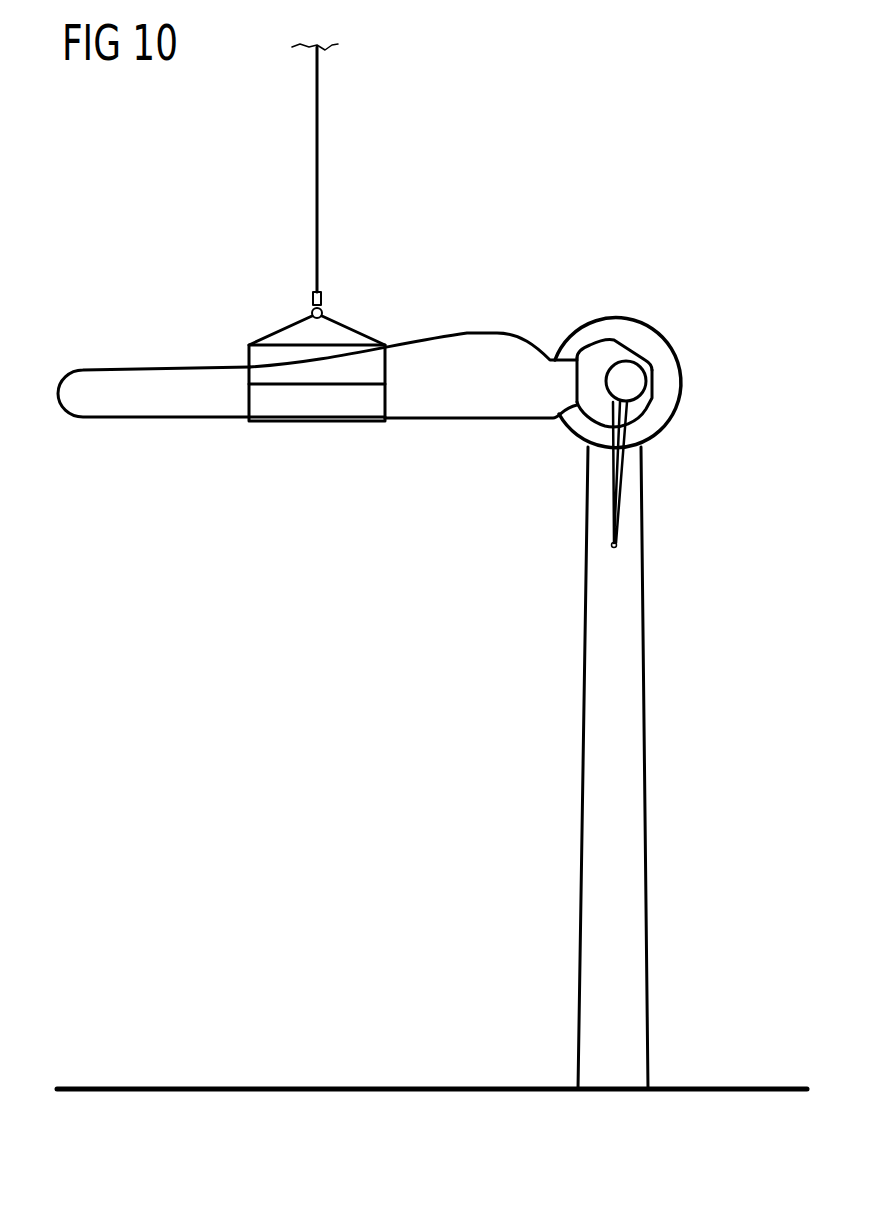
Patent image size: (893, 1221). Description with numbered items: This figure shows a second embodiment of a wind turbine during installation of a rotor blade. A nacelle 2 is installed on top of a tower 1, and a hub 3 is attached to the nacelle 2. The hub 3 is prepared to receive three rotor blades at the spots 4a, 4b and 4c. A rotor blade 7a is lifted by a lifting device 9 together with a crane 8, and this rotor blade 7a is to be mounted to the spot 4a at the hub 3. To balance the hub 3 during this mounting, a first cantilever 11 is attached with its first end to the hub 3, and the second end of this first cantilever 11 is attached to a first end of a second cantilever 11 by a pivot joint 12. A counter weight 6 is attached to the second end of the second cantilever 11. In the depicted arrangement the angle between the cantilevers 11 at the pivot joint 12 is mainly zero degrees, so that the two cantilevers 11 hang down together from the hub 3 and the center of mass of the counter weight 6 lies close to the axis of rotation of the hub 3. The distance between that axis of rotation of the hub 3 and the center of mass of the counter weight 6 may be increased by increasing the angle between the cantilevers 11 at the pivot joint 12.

The tower 1 is at (632, 620).
The nacelle 2 is at (568, 415).
The hub 3 is at (588, 353).
The spot 4a is at (577, 384).
The spot 4b is at (645, 413).
The spot 4c is at (635, 348).
The counter weight 6 is at (637, 383).
The rotor blade 7a is at (157, 418).
The crane 8 is at (317, 158).
The lifting device 9 is at (250, 343).
The cantilever 11 is at (612, 470).
The pivot joint 12 is at (618, 541).